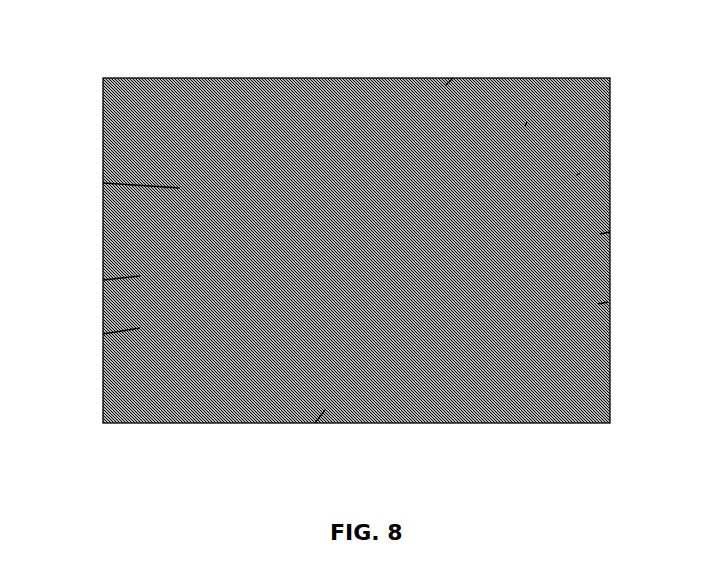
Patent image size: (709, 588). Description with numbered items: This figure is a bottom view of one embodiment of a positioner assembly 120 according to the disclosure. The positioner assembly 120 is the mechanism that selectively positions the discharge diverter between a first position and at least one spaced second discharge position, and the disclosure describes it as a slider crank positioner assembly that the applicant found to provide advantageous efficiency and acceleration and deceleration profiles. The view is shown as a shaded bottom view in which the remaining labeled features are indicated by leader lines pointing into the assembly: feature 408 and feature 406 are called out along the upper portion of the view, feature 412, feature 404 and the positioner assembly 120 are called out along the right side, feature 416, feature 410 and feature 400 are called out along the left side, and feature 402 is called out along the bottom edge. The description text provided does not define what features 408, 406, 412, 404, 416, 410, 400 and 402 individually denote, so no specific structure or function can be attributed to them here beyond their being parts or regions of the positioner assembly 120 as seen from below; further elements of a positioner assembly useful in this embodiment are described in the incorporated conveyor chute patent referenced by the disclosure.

The first region of the image 408 is at (453, 78).
The second region of the image 406 is at (527, 122).
The boundary line 412 is at (580, 173).
The positioner assembly 120 is at (610, 232).
The surface 404 is at (608, 302).
The edge line 416 is at (103, 183).
The lower region 410 is at (103, 280).
The image 400 is at (103, 334).
The dark area 402 is at (315, 423).